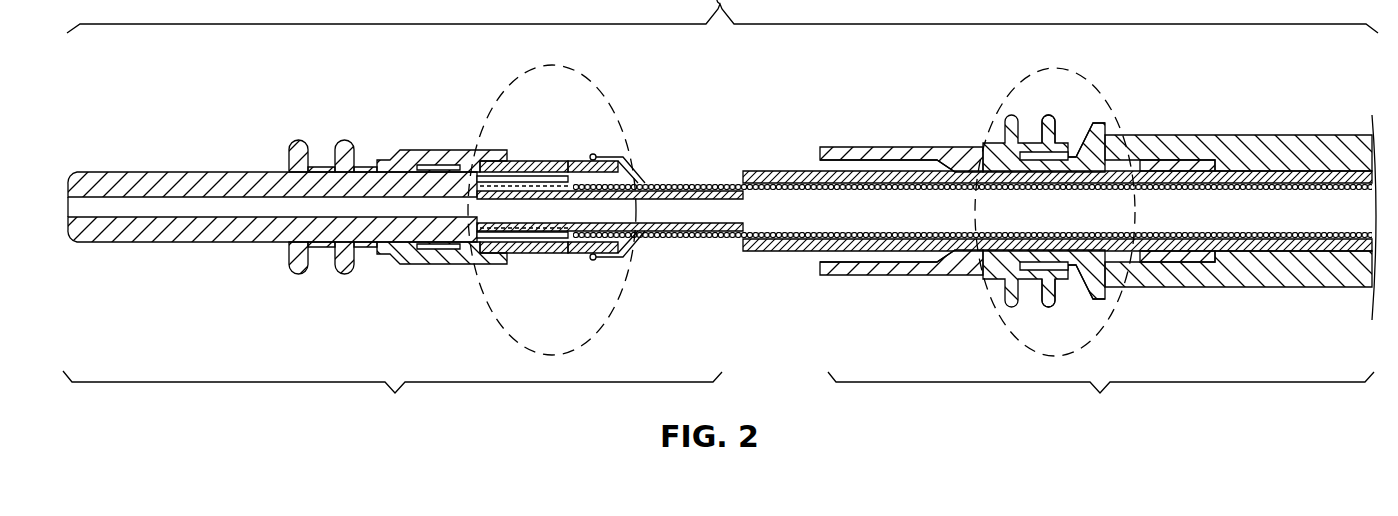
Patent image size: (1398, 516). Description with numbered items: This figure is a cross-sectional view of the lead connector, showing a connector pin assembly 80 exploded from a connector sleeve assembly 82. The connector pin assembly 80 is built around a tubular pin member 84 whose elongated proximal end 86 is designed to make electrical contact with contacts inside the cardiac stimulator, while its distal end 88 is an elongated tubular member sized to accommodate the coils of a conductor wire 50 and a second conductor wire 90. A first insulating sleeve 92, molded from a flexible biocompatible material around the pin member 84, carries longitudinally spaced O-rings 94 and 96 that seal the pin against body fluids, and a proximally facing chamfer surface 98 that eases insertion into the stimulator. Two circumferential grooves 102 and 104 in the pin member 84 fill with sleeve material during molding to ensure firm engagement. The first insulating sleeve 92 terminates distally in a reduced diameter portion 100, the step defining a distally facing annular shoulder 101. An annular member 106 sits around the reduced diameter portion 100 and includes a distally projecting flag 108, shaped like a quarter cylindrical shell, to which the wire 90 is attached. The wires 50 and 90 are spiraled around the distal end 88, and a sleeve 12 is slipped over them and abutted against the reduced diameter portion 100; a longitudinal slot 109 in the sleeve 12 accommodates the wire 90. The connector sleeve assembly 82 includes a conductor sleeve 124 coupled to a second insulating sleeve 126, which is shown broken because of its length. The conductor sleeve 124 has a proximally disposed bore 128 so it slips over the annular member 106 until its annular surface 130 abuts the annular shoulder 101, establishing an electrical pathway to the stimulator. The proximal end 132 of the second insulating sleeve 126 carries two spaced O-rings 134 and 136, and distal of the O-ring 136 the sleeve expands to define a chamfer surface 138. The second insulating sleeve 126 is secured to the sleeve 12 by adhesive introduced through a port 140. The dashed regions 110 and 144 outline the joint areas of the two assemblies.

The sleeve 12 is at (770, 251).
The conductor wire 50 is at (660, 184).
The connector pin assembly 80 is at (395, 393).
The connector sleeve assembly 82 is at (1100, 393).
The tubular pin member 84 is at (158, 172).
The elongated proximal end 86 is at (75, 178).
The distal end 88 is at (725, 184).
The second conductor wire 90 is at (637, 160).
The first insulating sleeve 92 is at (452, 150).
The O-ring 94 is at (298, 138).
The O-ring 96 is at (345, 138).
The chamfer surface 98 is at (392, 268).
The reduced diameter portion 100 is at (545, 178).
The annular shoulder 101 is at (505, 256).
The circumferential groove 102 is at (312, 168).
The circumferential groove 104 is at (362, 167).
The annular member 106 is at (517, 161).
The flag 108 is at (580, 161).
The slot 109 is at (748, 171).
The proximal joint region 110 is at (588, 74).
The conductor sleeve 124 is at (912, 147).
The second insulating sleeve 126 is at (1185, 135).
The bore 128 is at (856, 165).
The annular surface 130 is at (812, 147).
The proximal end 132 is at (1066, 150).
The O-ring 134 is at (1012, 118).
The O-ring 136 is at (1048, 118).
The chamfer surface 138 is at (1085, 300).
The port 140 is at (1320, 150).
The distal joint region 144 is at (1097, 76).